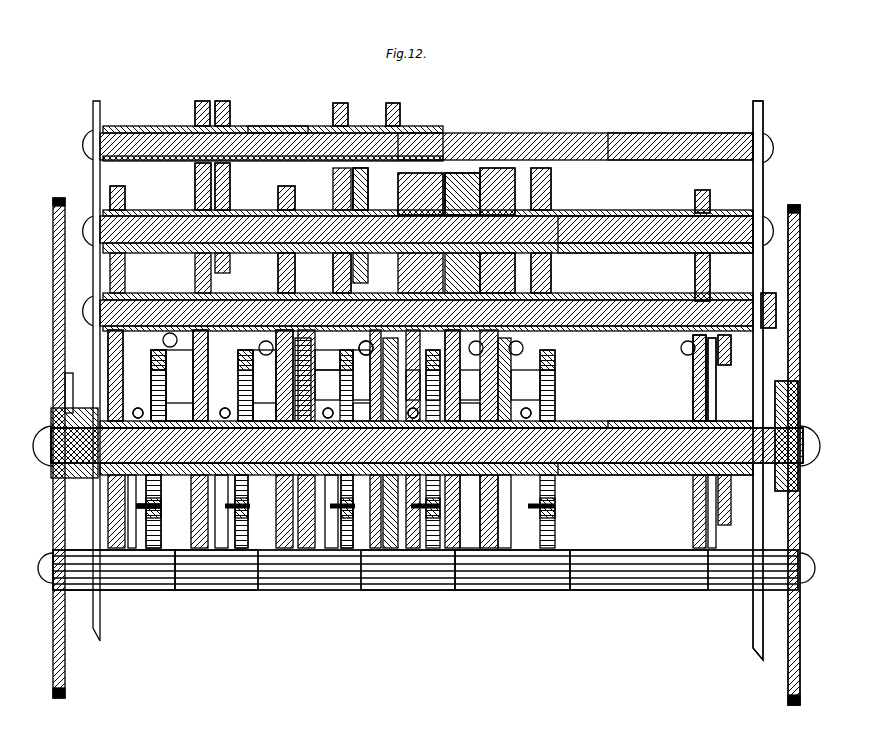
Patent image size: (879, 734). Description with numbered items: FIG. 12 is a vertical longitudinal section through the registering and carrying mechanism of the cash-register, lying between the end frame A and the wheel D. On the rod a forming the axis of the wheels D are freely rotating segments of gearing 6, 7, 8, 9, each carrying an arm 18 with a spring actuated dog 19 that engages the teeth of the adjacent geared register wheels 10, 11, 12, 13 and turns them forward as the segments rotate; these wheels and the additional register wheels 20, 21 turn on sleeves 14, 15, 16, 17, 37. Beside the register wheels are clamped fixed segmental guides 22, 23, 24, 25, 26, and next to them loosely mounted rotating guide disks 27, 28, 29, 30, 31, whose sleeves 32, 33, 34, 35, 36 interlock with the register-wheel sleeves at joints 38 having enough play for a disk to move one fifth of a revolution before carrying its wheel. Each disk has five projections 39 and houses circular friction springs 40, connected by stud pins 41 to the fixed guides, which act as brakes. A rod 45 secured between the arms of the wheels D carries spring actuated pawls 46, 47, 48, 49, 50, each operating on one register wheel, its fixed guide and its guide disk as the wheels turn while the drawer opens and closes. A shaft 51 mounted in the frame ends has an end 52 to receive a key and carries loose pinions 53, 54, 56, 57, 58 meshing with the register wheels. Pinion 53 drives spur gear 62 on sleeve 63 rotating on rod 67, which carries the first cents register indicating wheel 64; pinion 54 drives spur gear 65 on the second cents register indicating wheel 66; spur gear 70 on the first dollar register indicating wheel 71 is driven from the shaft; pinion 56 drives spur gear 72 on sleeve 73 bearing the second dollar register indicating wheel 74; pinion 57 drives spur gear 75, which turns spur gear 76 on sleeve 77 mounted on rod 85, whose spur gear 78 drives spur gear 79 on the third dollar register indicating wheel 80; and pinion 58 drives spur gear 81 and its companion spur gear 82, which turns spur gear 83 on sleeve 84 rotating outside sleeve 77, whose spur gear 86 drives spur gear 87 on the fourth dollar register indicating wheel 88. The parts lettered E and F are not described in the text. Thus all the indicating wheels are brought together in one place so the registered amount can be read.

The spur gear 76 is at (188, 108).
The spur gear 83 is at (222, 103).
The sleeve 77 is at (258, 125).
The sleeve 84 is at (325, 108).
The spur gear 86 is at (378, 100).
The fourth dollar register indicating wheel 88 is at (352, 165).
The spur gear 78 is at (392, 122).
The third dollar register indicating wheel 80 is at (412, 170).
The second dollar register indicating wheel 74 is at (440, 175).
The spur gear 81 is at (127, 189).
The spur gear wheel 75 is at (188, 190).
The spur gear 82 is at (222, 190).
The spur gear wheel 72 is at (287, 183).
The sleeve 73 is at (310, 207).
The spur gear 79 is at (367, 189).
The first dollar register indicating wheel 71 is at (476, 180).
The spur gear 70 is at (452, 195).
The spur gear 65 is at (490, 185).
The second cents register indicating wheel 66 is at (528, 180).
The first cents register indicating wheel 64 is at (545, 170).
The rod 85 is at (672, 152).
The spur gear 62 is at (702, 190).
The sleeve 63 is at (600, 246).
The rod 67 is at (648, 238).
The loose pinion 53 is at (702, 275).
The spur gear 87 is at (325, 262).
The loose pinion 58 is at (112, 332).
The loose pinion 57 is at (186, 334).
The loose pinion 56 is at (270, 352).
The projections 39 is at (143, 350).
The register wheel 21 is at (143, 365).
The rotating guide disk 31 is at (158, 361).
The register wheel 20 is at (179, 385).
The fixed segmental guide 26 is at (135, 405).
The sleeve 37 is at (179, 412).
The fixed segmental guide 25 is at (221, 405).
The rotating guide disk 30 is at (245, 363).
The register wheel 13 is at (264, 385).
The sleeve 17 is at (266, 412).
The spring actuated dog 19 is at (305, 334).
The rotating guide disk 29 is at (327, 363).
The segment of gearing 9 is at (327, 385).
The fixed segmental guide 24 is at (325, 406).
The sleeve 16 is at (361, 411).
The register wheel 12 is at (361, 375).
The interlocking joints 38 is at (165, 442).
The segment of gearing 8 is at (413, 385).
The fixed segmental guide 23 is at (413, 406).
The loose pinion 54 is at (460, 375).
The rotating guide disk 28 is at (432, 372).
The register wheel 11 is at (470, 385).
The sleeve 15 is at (470, 410).
The segment of gearing 7 is at (525, 385).
The fixed segmental guide 22 is at (523, 406).
The rotating guide disk 27 is at (547, 373).
The shaft 51 is at (634, 323).
The arm 18 is at (716, 342).
The end of shaft 52 is at (764, 322).
The register wheel 10 is at (685, 380).
The segment of gearing 6 is at (710, 384).
The sleeve 14 is at (648, 416).
The sleeve 32 is at (607, 468).
The sleeve 36 is at (164, 511).
The circular friction springs 40 is at (153, 500).
The stud pins 41 is at (153, 510).
The spring actuated pawl 50 is at (153, 524).
The sleeve 35 is at (252, 511).
The spring actuated pawl 49 is at (223, 558).
The sleeve 34 is at (354, 511).
The sleeve 33 is at (469, 511).
The spring actuated pawl 47 is at (440, 525).
The spring actuated pawl 46 is at (552, 525).
The rod 45 is at (505, 570).
The spring actuated pawl 48 is at (360, 545).
The end frame A is at (756, 168).
The wheel D is at (793, 315).
The bracket E is at (60, 368).
The bracket F is at (772, 376).
The rod a is at (40, 455).